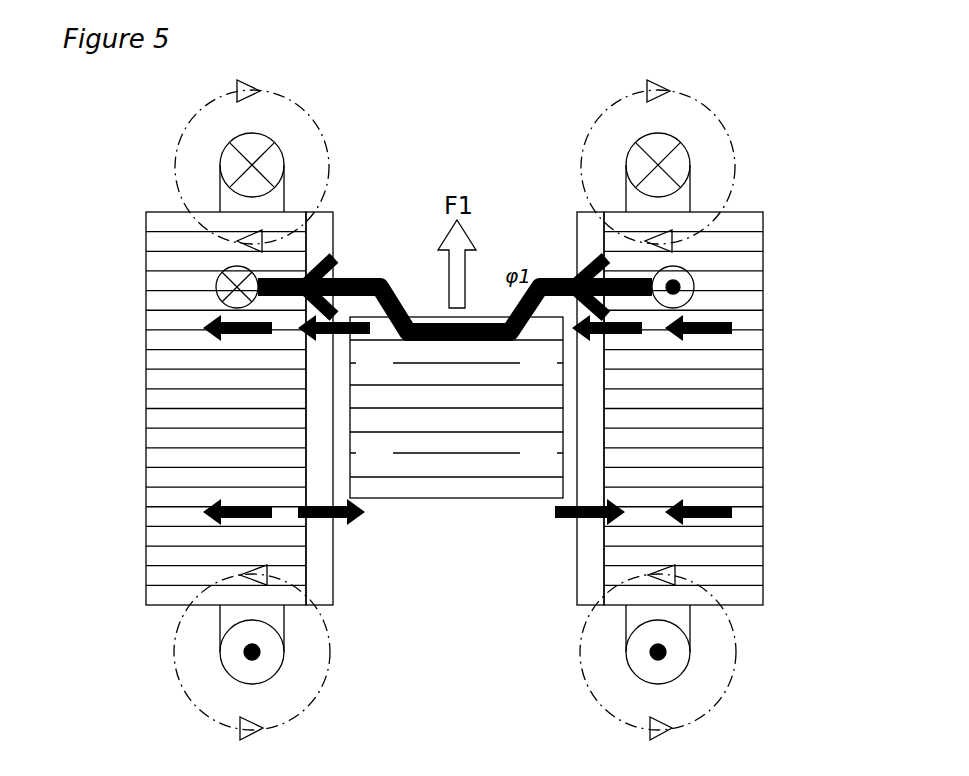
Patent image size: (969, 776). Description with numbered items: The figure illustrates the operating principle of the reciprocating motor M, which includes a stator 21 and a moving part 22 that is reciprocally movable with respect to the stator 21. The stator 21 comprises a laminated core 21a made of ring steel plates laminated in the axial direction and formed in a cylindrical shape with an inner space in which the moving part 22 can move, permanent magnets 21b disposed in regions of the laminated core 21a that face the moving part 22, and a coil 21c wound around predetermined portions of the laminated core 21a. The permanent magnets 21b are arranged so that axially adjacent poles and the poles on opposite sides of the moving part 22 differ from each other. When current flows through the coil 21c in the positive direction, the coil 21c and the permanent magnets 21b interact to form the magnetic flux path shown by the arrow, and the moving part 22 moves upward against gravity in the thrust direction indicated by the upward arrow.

The stator 21 is at (124, 259).
The laminated core 21a is at (155, 318).
The permanent magnets 21b is at (337, 232).
The coil 21c is at (220, 660).
The moving part 22 is at (452, 500).
The reciprocating motor M is at (794, 188).